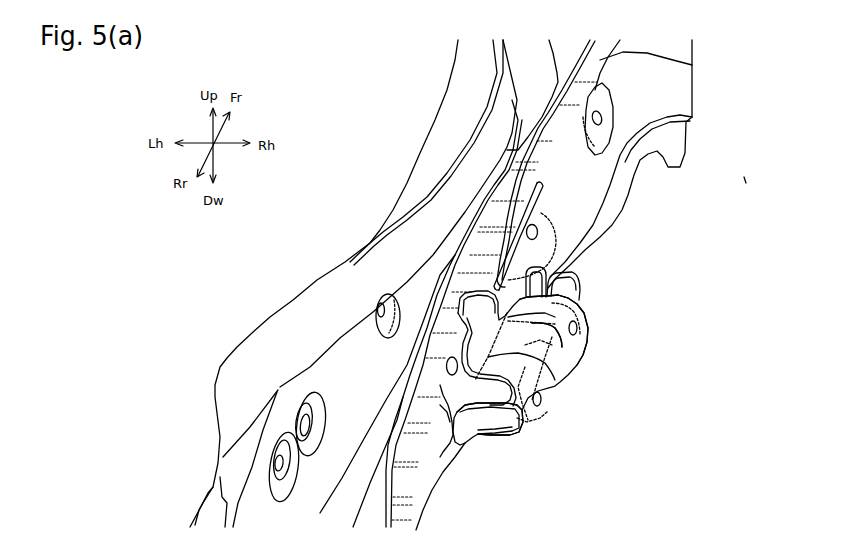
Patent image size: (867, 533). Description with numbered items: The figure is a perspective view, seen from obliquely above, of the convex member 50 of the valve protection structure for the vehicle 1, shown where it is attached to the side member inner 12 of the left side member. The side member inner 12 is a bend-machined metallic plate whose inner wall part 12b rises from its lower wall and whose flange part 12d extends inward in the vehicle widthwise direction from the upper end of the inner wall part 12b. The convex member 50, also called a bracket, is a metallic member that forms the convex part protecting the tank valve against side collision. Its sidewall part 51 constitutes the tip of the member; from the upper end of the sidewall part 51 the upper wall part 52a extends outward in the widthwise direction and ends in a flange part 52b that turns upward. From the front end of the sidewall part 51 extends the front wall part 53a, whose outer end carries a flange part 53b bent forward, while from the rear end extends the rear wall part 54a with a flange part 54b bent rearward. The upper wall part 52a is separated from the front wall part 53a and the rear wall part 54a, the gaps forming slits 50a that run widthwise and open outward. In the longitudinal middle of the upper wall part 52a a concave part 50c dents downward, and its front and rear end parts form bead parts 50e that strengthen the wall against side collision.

The vehicle 1 is at (389, 128).
The side member inner 12 is at (743, 33).
The inner wall part 12b is at (683, 91).
The flange part 12d is at (688, 66).
The convex member 50 is at (648, 378).
The slit 50a is at (560, 303).
The concave part 50c is at (545, 342).
The bead part 50e is at (580, 341).
The sidewall part 51 is at (555, 362).
The upper wall part 52a is at (583, 318).
The flange part 52b is at (503, 280).
The front wall part 53a is at (500, 435).
The flange part 53b is at (473, 437).
The rear wall part 54a is at (552, 288).
The flange part 54b is at (553, 277).